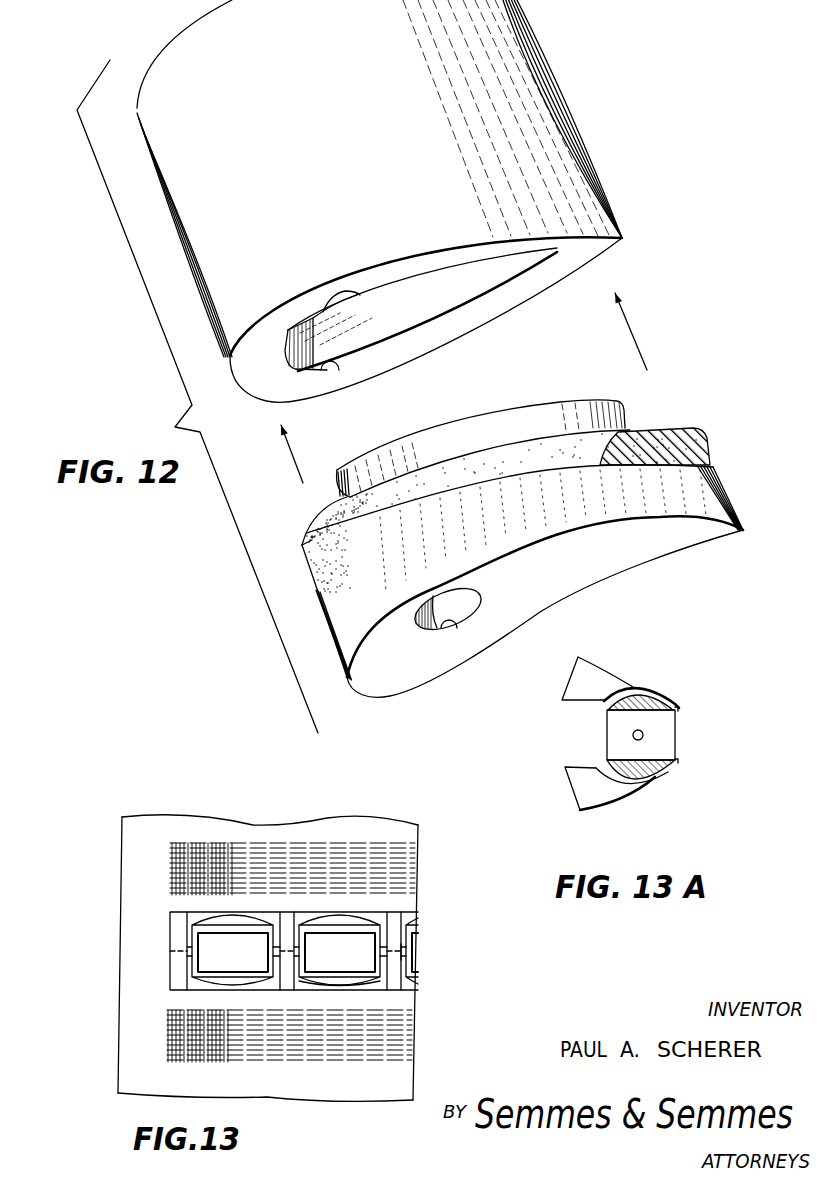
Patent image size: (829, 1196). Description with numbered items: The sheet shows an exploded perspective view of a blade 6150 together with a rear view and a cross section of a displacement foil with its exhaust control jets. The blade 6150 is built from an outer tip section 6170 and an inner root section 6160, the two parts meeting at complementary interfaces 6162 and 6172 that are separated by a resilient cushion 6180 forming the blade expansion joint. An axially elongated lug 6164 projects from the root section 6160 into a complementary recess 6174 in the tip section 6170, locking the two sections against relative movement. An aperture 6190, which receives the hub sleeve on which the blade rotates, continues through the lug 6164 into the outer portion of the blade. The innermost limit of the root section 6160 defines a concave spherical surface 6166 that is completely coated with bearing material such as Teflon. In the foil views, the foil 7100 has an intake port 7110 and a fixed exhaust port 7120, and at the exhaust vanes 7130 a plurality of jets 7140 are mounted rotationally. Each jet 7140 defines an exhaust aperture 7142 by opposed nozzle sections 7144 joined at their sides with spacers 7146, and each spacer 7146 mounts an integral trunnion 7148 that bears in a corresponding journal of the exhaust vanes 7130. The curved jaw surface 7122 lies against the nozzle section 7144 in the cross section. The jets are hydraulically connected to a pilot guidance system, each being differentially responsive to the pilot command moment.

In FIG. 12, the blade 6150 is at (630, 146).
In FIG. 12, the root section 6160 is at (700, 505).
In FIG. 12, the interface 6162 is at (613, 428).
In FIG. 12, the axially elongated lug 6164 is at (527, 420).
In FIG. 12, the concave spherical surface 6166 is at (667, 540).
In FIG. 12, the tip section 6170 is at (373, 125).
In FIG. 12, the interface 6172 is at (525, 278).
In FIG. 12, the recess 6174 is at (330, 368).
In FIG. 12, the resilient cushion 6180 is at (308, 547).
In FIG. 12, the aperture 6190 is at (460, 627).
In FIG. 13, the foil 7100 is at (108, 907).
In FIG. 13, the intake port 7110 is at (170, 868).
In FIG. 13, the fixed exhaust port 7120 is at (177, 973).
In FIG. 13A, the fixed exhaust port 7120 is at (602, 677).
In FIG. 13A, the curved jaw surface 7122 is at (637, 683).
In FIG. 13, the exhaust vanes 7130 is at (187, 920).
In FIG. 13, the jet 7140 is at (218, 952).
In FIG. 13A, the jet 7140 is at (678, 700).
In FIG. 13, the exhaust aperture 7142 is at (362, 957).
In FIG. 13A, the exhaust aperture 7142 is at (655, 743).
In FIG. 13, the nozzle section 7144 is at (313, 970).
In FIG. 13A, the nozzle section 7144 is at (663, 770).
In FIG. 13, the spacer 7146 is at (402, 955).
In FIG. 13A, the spacer 7146 is at (608, 723).
In FIG. 13A, the trunnion 7148 is at (640, 795).